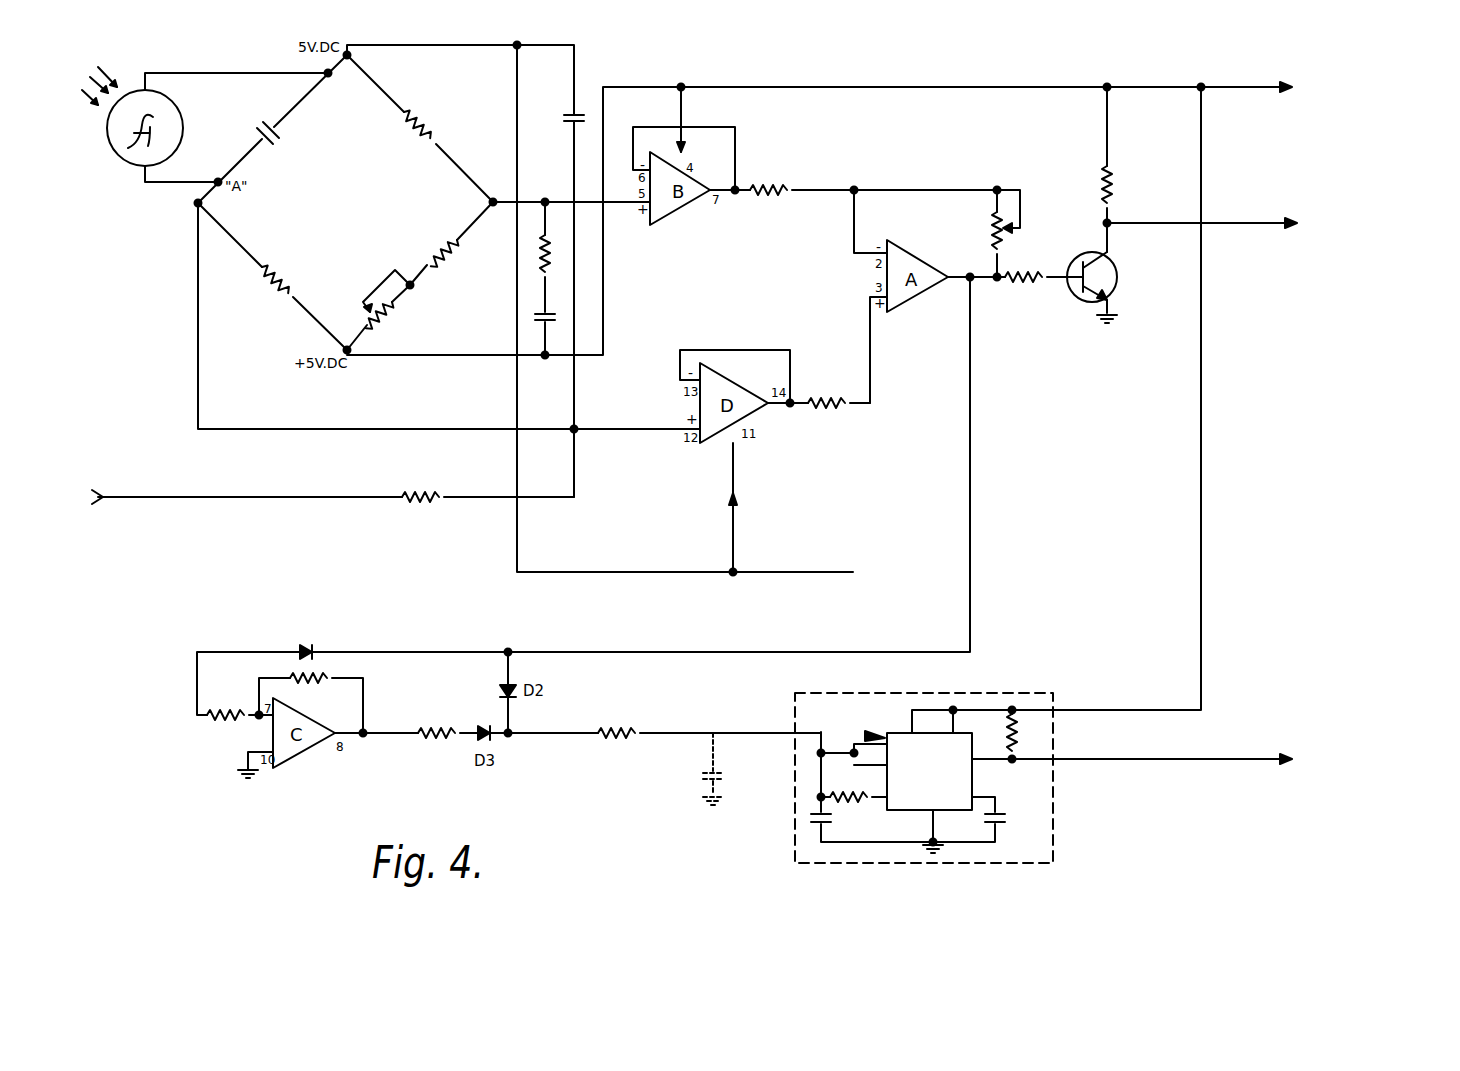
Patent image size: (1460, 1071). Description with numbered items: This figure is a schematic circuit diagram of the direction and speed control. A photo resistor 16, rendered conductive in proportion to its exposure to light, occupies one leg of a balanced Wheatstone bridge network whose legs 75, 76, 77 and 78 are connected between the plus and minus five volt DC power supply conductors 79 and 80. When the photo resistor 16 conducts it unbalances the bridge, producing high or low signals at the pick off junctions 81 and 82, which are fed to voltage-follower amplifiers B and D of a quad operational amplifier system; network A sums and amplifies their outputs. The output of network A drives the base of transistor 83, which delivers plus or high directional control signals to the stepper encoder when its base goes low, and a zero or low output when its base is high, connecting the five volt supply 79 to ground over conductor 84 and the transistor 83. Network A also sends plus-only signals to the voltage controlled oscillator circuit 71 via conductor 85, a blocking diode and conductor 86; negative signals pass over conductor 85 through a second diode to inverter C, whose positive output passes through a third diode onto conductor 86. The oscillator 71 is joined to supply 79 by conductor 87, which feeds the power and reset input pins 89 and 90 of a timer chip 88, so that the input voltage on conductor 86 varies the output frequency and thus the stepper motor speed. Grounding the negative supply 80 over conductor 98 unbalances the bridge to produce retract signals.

The photo resistor 16 is at (182, 112).
The voltage controlled oscillator circuit 71 is at (1112, 793).
The bridge leg 75 is at (300, 100).
The bridge leg 76 is at (458, 172).
The bridge leg 77 is at (358, 326).
The bridge leg 78 is at (247, 250).
The 5 volt DC power supply conductor 79 is at (448, 355).
The negative power supply conductor 80 is at (430, 45).
The pick off junction 81 is at (494, 200).
The pick off junction 82 is at (196, 207).
The transistor 83 is at (1080, 301).
The conductor 84 is at (1107, 130).
The conductor 85 is at (970, 482).
The conductor 86 is at (670, 735).
The conductor 87 is at (1201, 497).
The timer chip 88 is at (972, 778).
The power input pin 89 is at (912, 724).
The reset input pin 90 is at (955, 722).
The conductor 98 is at (355, 497).